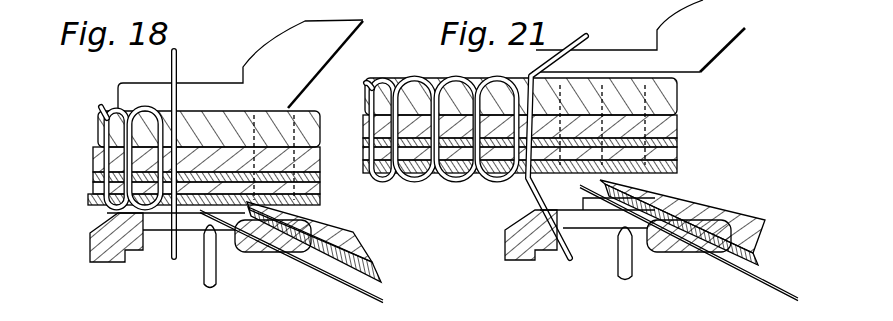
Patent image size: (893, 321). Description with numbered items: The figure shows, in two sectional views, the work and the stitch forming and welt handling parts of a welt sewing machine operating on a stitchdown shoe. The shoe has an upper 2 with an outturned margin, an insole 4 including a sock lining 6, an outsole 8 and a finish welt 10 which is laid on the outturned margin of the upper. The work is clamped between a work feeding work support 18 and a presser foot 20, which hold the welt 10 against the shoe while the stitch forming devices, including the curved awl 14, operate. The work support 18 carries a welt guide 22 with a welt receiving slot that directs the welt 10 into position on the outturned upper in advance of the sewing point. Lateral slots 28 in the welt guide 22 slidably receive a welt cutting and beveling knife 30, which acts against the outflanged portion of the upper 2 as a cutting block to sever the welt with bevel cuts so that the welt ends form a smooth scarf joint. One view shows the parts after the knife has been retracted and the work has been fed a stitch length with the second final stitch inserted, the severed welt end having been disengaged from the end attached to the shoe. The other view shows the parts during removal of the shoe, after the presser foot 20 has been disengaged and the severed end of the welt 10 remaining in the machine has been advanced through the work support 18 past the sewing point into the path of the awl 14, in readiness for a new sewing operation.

In FIG. 18, the upper 2 is at (320, 184).
In FIG. 21, the upper 2 is at (677, 152).
In FIG. 18, the insole 4 is at (320, 148).
In FIG. 21, the insole 4 is at (677, 118).
In FIG. 18, the sock lining 6 is at (327, 158).
In FIG. 21, the sock lining 6 is at (677, 140).
In FIG. 18, the outsole 8 is at (320, 112).
In FIG. 21, the outsole 8 is at (677, 84).
In FIG. 18, the finish welt 10 is at (320, 200).
In FIG. 21, the finish welt 10 is at (677, 167).
In FIG. 18, the curved awl 14 is at (219, 270).
In FIG. 21, the curved awl 14 is at (635, 267).
In FIG. 18, the work support 18 is at (98, 223).
In FIG. 21, the work support 18 is at (509, 219).
In FIG. 18, the presser foot 20 is at (189, 83).
In FIG. 21, the presser foot 20 is at (607, 50).
In FIG. 18, the welt guide 22 is at (350, 237).
In FIG. 21, the welt guide 22 is at (757, 237).
In FIG. 18, the lateral slots 28 is at (246, 250).
In FIG. 21, the lateral slots 28 is at (660, 250).
In FIG. 18, the welt cutting and beveling knife 30 is at (352, 287).
In FIG. 21, the welt cutting and beveling knife 30 is at (778, 296).